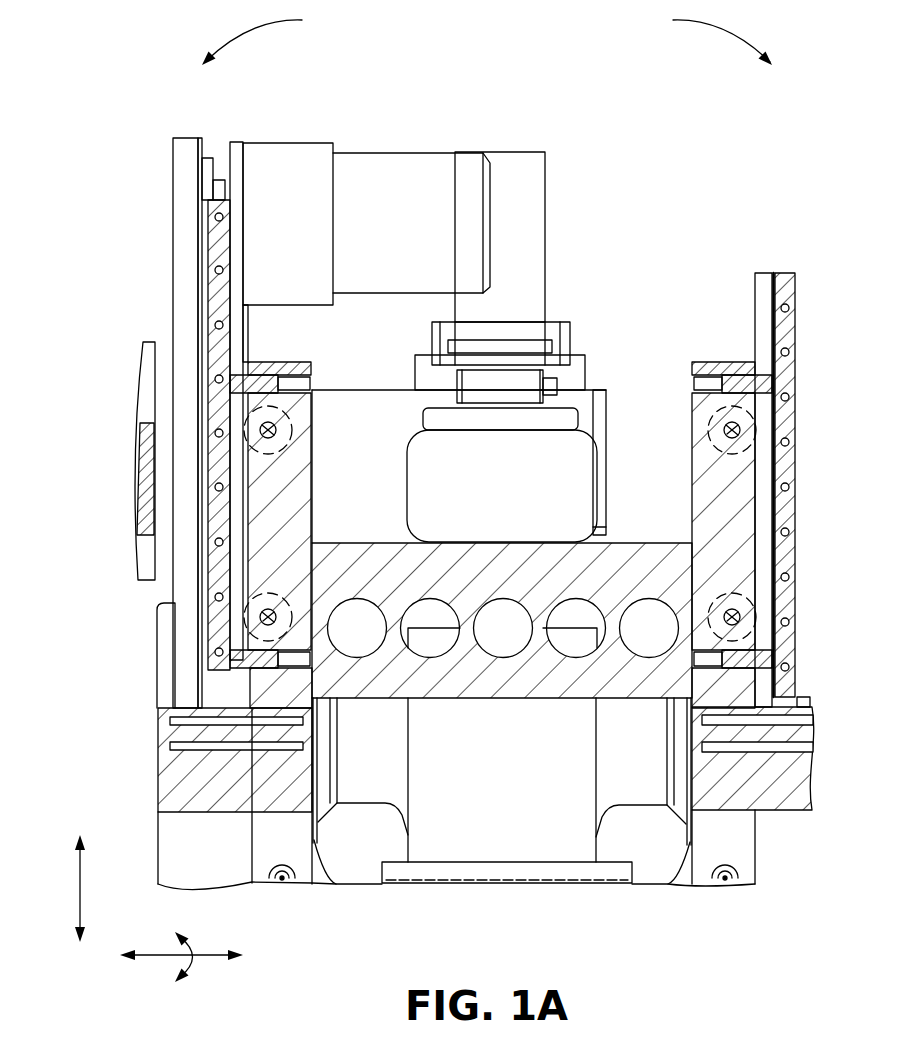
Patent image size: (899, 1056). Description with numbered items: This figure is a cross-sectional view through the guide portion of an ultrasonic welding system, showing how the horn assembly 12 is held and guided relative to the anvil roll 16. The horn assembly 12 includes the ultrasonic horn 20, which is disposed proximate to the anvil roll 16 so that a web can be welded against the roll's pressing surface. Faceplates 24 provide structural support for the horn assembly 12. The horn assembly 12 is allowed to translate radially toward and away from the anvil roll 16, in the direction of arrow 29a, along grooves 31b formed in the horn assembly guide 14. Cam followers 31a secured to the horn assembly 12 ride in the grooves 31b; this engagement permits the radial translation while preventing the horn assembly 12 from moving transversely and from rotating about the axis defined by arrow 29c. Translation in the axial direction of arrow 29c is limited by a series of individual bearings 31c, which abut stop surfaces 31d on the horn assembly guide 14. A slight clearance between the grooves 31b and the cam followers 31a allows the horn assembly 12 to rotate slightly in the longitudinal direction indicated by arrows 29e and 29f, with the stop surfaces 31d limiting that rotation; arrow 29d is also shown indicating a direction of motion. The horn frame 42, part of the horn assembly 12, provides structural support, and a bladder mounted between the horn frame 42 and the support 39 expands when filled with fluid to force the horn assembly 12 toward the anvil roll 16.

The horn assembly 12 is at (651, 527).
The horn assembly guide 14 is at (212, 583).
The anvil roll 16 is at (640, 888).
The ultrasonic horn 20 is at (633, 773).
The faceplates 24 is at (276, 358).
The arrow indicating radial translation 29a is at (78, 883).
The arrow indicating axial direction 29c is at (158, 957).
The rotational direction of motion 29d is at (197, 948).
The arrow indicating longitudinal rotation 29e is at (257, 33).
The arrow indicating longitudinal rotation 29f is at (720, 36).
The cam followers 31a is at (237, 383).
The grooves 31b is at (237, 510).
The bearings 31c is at (258, 455).
The stop surfaces 31d is at (256, 428).
The support 39 is at (567, 322).
The horn frame 42 is at (354, 543).